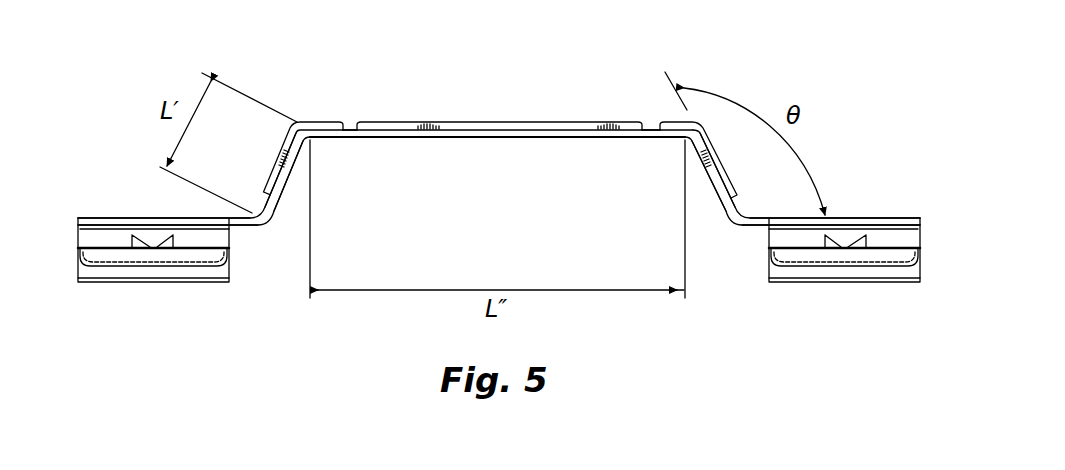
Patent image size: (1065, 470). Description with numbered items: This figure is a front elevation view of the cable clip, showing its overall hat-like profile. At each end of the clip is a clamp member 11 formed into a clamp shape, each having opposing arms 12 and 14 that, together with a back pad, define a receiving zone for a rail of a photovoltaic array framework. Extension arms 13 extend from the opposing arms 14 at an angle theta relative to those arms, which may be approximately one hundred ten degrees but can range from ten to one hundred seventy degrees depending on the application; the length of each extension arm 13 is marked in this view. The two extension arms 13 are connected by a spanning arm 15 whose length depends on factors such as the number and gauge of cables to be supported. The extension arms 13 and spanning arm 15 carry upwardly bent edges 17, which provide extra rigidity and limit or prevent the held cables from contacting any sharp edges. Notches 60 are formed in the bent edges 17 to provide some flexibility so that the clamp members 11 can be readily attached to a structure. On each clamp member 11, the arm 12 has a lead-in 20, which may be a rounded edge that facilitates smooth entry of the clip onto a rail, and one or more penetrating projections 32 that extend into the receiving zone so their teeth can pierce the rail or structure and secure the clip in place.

The clamp member 11 is at (498, 232).
The arm 12 is at (172, 278).
The extension arm 13 is at (272, 212).
The arm 14 is at (170, 214).
The spanning arm 15 is at (517, 137).
The upwardly bent edge 17 is at (462, 127).
The lead-in 20 is at (120, 258).
The penetrating projection 32 is at (130, 242).
The notch 60 is at (350, 118).